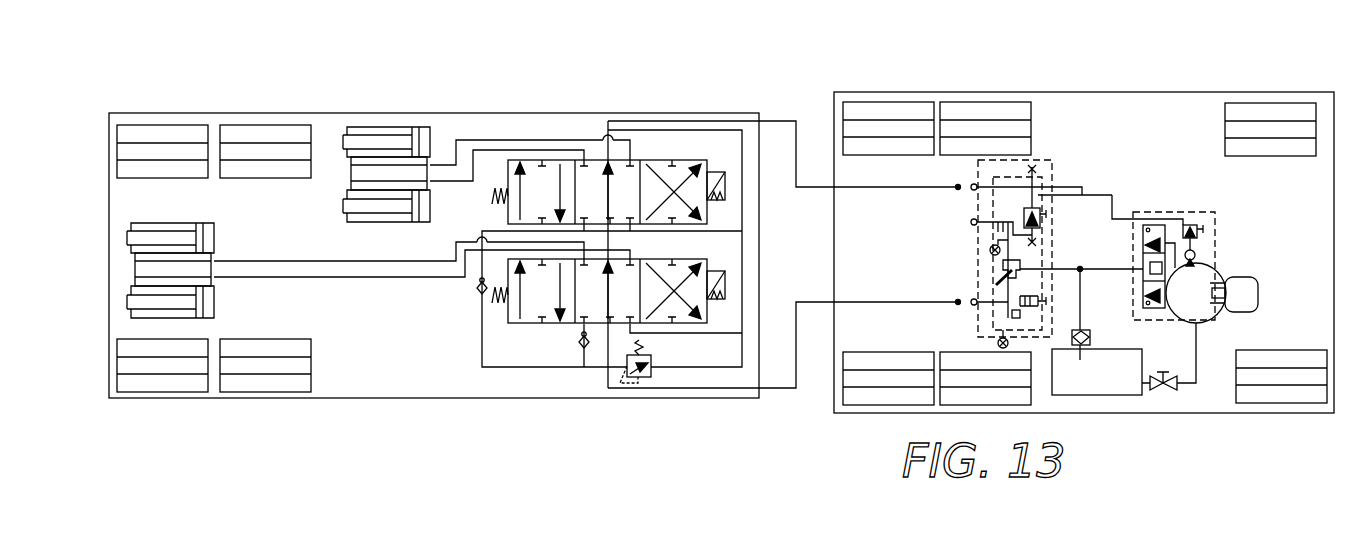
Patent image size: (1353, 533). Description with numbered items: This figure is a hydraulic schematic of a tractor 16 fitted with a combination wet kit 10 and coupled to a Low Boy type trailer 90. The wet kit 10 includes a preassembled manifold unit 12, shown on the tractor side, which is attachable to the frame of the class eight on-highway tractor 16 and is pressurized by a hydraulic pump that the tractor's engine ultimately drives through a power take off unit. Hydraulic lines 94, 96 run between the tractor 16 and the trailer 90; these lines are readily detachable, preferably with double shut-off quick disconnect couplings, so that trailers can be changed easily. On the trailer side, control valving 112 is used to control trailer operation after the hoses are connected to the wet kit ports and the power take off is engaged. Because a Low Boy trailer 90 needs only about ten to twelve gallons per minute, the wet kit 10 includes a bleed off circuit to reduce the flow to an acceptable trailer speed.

The wet kit 10 is at (1127, 148).
The preassembled manifold unit 12 is at (1056, 154).
The tractor 16 is at (1186, 93).
The Low Boy trailer 90 is at (472, 113).
The hydraulic line 94 is at (780, 121).
The hydraulic line 96 is at (782, 390).
The control valving 112 is at (651, 158).